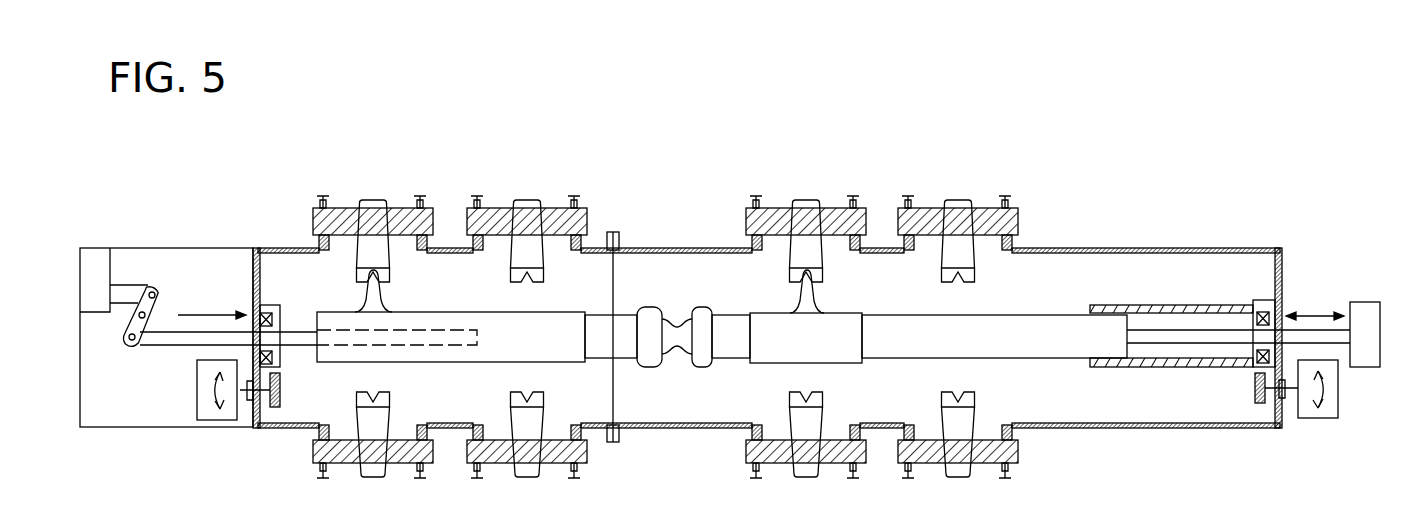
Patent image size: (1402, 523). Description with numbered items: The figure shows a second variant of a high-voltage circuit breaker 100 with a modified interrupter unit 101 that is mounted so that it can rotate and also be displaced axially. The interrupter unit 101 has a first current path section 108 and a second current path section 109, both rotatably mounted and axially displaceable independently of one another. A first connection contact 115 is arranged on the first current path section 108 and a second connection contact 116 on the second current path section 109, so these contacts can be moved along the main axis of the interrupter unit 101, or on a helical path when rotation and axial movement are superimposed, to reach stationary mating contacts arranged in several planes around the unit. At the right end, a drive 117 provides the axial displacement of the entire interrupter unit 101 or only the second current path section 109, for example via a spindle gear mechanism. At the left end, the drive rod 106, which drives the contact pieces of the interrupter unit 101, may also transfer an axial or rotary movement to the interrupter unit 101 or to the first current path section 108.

The high-voltage circuit breaker 100 is at (705, 168).
The interrupter unit 101 is at (731, 378).
The drive rod 106 is at (158, 340).
The first current path section 108 is at (455, 320).
The second current path section 109 is at (765, 320).
The first connection contact 115 is at (366, 298).
The second connection contact 116 is at (808, 297).
The drive 117 is at (1363, 302).